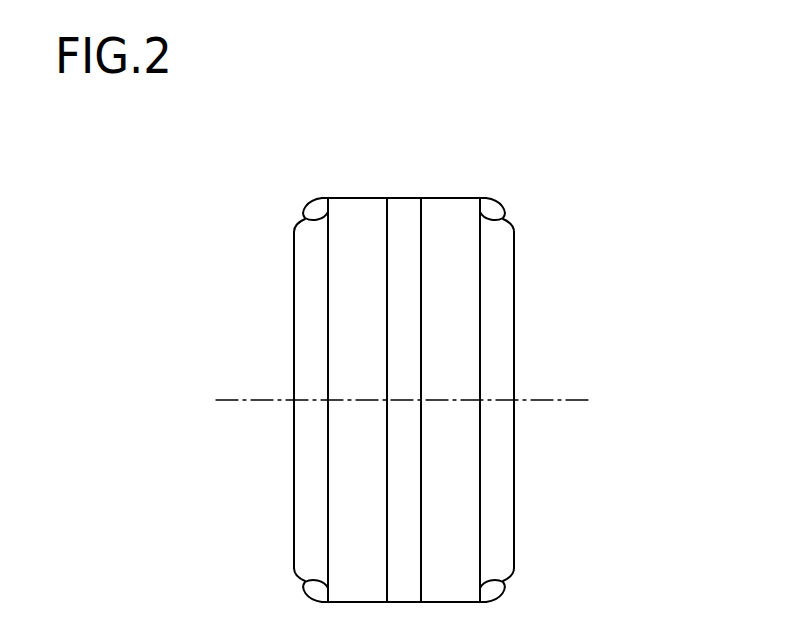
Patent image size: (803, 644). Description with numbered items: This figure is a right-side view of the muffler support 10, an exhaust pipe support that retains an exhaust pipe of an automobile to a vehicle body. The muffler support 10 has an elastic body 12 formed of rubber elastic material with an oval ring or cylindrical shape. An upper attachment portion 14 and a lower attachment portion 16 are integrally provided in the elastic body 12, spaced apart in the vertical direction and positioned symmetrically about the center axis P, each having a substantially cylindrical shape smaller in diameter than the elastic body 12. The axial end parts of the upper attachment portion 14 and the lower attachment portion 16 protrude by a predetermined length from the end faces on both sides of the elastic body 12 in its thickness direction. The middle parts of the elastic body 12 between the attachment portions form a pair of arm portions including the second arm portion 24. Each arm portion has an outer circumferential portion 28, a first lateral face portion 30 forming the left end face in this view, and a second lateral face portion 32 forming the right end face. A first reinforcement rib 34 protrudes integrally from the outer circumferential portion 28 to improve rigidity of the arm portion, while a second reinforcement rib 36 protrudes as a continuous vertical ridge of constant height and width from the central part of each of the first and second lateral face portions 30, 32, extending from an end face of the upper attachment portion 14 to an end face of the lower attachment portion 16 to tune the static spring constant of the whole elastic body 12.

The muffler support 10 is at (508, 147).
The elastic body 12 is at (352, 172).
The upper attachment portion 14 is at (506, 200).
The lower attachment portion 16 is at (502, 600).
The second arm portion 24 is at (456, 494).
The outer circumferential portion 28 is at (357, 537).
The first lateral face portion 30 is at (327, 353).
The second lateral face portion 32 is at (481, 341).
The first reinforcement rib 34 is at (390, 480).
The second reinforcement rib 36 is at (313, 307).
The center axis P is at (558, 398).